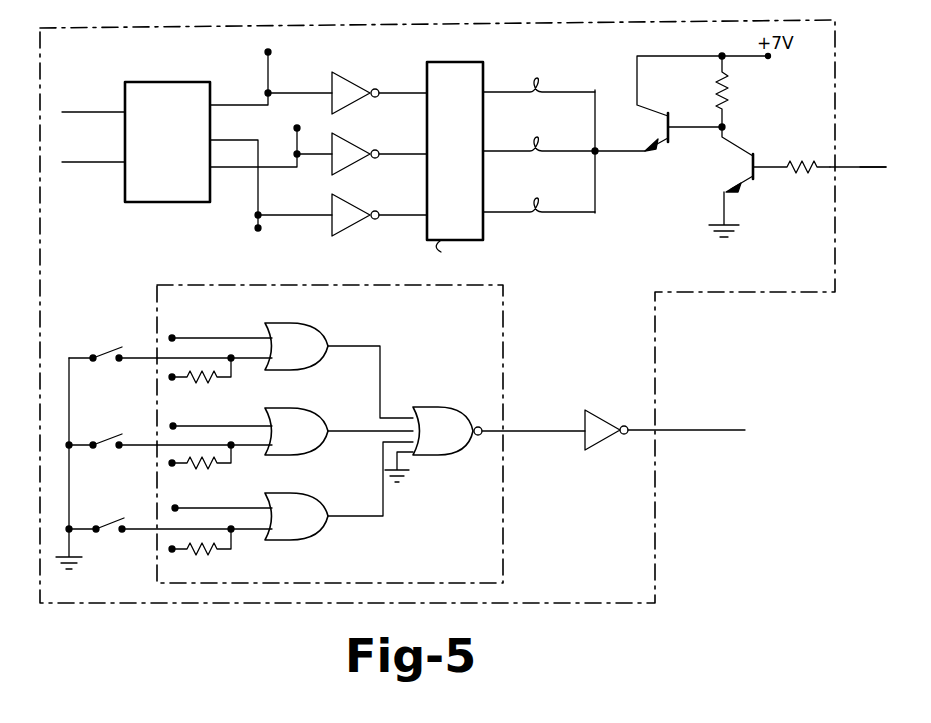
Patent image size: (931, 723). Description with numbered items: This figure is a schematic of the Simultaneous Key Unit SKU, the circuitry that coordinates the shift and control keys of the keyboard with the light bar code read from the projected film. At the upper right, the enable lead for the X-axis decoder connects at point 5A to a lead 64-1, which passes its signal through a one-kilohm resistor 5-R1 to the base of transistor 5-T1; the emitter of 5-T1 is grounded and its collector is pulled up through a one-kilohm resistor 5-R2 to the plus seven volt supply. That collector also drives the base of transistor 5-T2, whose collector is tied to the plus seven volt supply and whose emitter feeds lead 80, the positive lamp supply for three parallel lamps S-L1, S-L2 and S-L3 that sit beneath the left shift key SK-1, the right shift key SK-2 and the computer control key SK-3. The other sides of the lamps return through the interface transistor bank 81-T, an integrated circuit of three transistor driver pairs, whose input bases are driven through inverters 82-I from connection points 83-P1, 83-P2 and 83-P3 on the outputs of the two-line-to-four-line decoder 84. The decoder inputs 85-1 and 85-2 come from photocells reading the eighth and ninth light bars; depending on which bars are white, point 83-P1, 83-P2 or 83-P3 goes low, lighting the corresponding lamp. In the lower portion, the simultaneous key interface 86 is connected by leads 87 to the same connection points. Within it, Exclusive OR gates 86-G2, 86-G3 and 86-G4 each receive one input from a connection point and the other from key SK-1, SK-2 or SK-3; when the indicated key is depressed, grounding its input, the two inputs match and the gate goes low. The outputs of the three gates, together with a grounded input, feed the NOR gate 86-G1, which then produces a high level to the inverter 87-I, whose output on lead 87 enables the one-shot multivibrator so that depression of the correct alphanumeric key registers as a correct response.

The 2-line-to-4-line decoder 84 is at (139, 82).
The decoder input line 85-1 is at (85, 110).
The decoder input line 85-2 is at (95, 165).
The connection point 83-P1 is at (231, 240).
The connection point 83-P2 is at (232, 268).
The connection point 83-P3 is at (240, 263).
The inverters 82-I is at (353, 72).
The interface transistor bank 81-T is at (455, 62).
The simultaneous key lamp S-L1 is at (539, 193).
The simultaneous key lamp S-L2 is at (539, 133).
The simultaneous key lamp S-L3 is at (539, 71).
The lamp supply lead 80 is at (618, 154).
The transistor 5-T2 is at (684, 117).
The transistor 5-T1 is at (710, 177).
The 1K resistor 5-R2 is at (734, 91).
The 1K resistor 5-R1 is at (791, 168).
The connection point 5A is at (871, 163).
The lead 64-1 is at (857, 168).
The left shift key SK-1 is at (170, 367).
The right shift key SK-2 is at (170, 455).
The computer control key SK-3 is at (170, 539).
The Exclusive OR gate 86-G4 is at (339, 370).
The Exclusive OR gate 86-G3 is at (339, 445).
The Exclusive OR gate 86-G2 is at (339, 506).
The NOR gate 86-G1 is at (485, 426).
The simultaneous key interface 86 is at (508, 533).
The inverter 87-I is at (603, 410).
The lead 87 is at (683, 428).
The Simultaneous Key Unit SKU is at (660, 492).